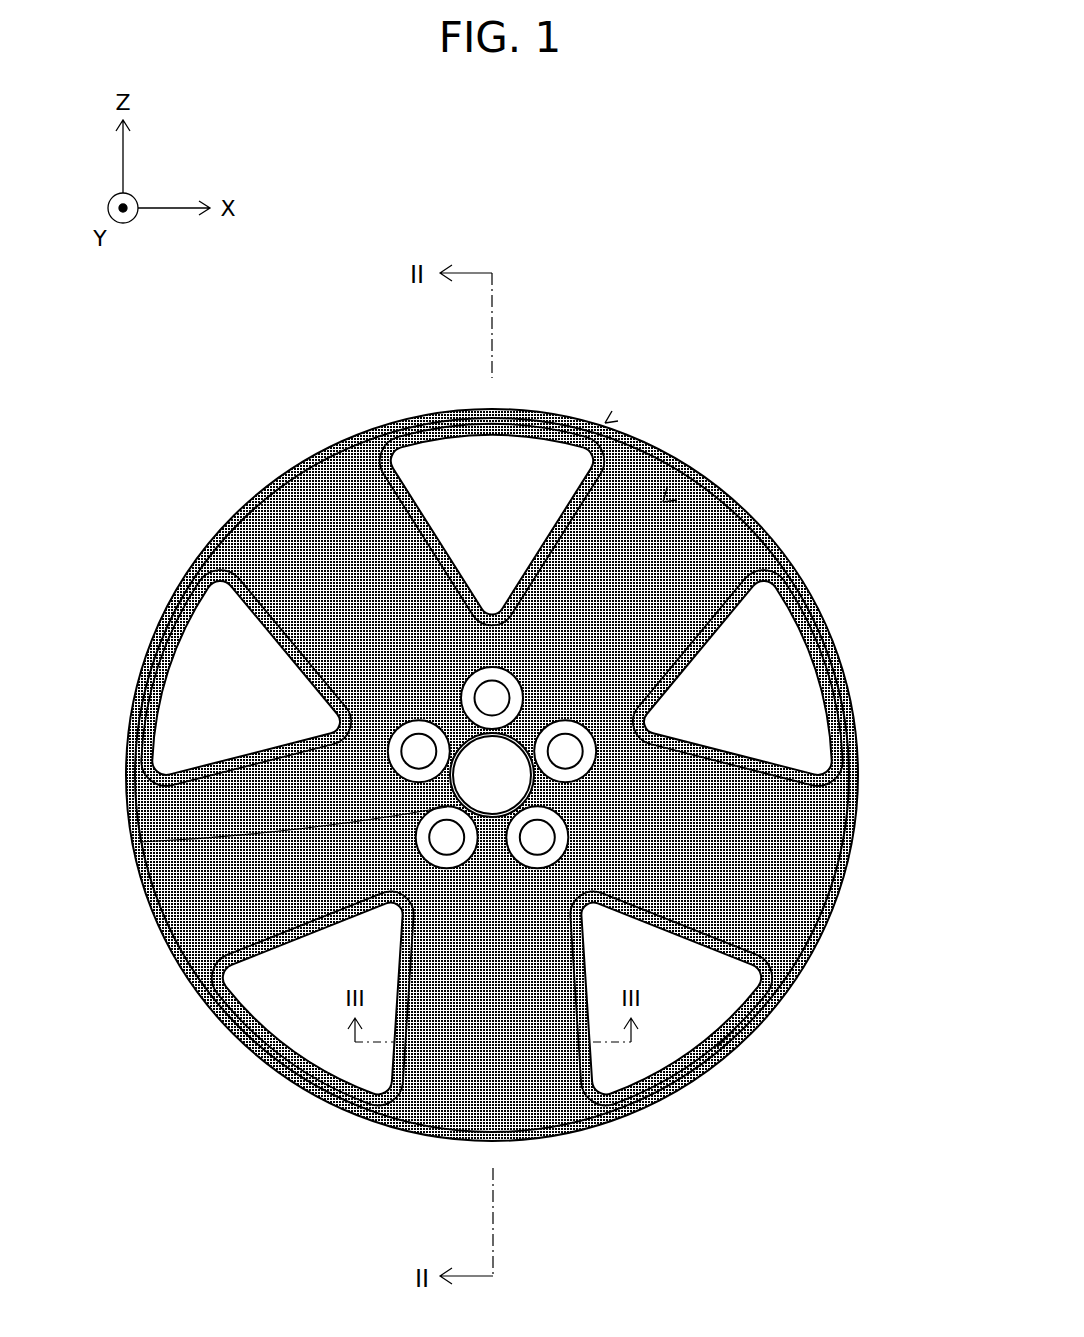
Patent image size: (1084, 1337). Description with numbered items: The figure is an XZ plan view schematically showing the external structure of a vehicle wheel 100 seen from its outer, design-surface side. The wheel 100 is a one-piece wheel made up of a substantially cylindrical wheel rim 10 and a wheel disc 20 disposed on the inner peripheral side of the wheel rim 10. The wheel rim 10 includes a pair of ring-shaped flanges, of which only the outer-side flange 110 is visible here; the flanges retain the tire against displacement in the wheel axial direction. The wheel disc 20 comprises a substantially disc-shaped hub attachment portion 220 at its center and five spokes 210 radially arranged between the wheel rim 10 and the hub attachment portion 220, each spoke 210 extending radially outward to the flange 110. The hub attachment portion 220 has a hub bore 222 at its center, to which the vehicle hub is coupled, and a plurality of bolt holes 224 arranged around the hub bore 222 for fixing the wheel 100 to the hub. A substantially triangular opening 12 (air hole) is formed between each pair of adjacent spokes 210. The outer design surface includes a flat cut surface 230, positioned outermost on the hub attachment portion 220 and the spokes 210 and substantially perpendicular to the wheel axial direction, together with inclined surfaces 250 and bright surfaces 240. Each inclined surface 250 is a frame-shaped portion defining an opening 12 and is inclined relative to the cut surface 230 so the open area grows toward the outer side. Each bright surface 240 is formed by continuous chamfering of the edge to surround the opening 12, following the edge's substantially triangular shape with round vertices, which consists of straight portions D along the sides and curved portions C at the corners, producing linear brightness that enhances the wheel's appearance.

The vehicle wheel 100 is at (633, 312).
The wheel rim 10 is at (605, 423).
The wheel disc 20 is at (663, 502).
The flange 110 is at (468, 407).
The opening 12 is at (475, 532).
The spoke 210 is at (327, 515).
The hub attachment portion 220 is at (133, 847).
The hub bore 222 is at (467, 789).
The bolt hole 224 is at (537, 842).
The cut surface 230 is at (773, 912).
The bright surface 240 is at (712, 942).
The inclined surface 250 is at (717, 1047).
The curved portion C is at (752, 615).
The straight portion D is at (731, 761).